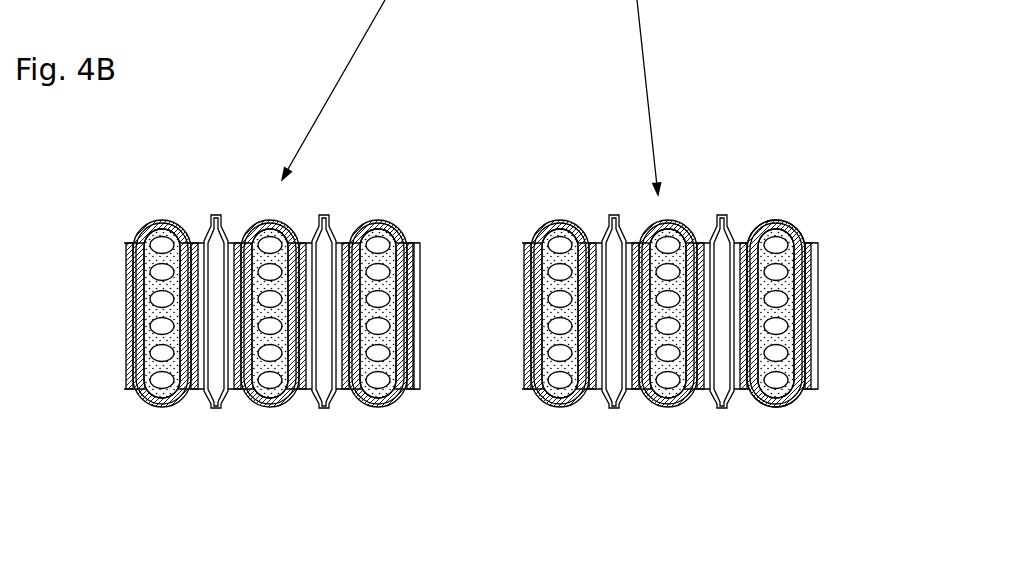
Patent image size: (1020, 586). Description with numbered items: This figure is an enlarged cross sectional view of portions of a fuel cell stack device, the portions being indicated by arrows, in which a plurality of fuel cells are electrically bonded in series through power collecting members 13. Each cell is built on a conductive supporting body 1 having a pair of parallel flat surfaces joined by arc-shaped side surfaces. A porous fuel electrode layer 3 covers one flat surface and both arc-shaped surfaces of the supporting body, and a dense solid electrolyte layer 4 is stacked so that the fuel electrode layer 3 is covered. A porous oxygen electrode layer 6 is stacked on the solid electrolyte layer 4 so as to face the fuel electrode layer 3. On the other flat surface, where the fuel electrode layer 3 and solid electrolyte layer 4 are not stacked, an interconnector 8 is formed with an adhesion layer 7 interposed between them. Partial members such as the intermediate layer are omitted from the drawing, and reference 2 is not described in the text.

The conductive supporting body 1 is at (755, 402).
The electrode plate 2 is at (770, 383).
The fuel electrode layer 3 is at (788, 403).
The solid electrolyte layer 4 is at (778, 413).
The oxygen electrode layer 6 is at (744, 243).
The adhesion layer 7 is at (800, 248).
The interconnector 8 is at (809, 248).
The power collecting member 13 is at (725, 216).